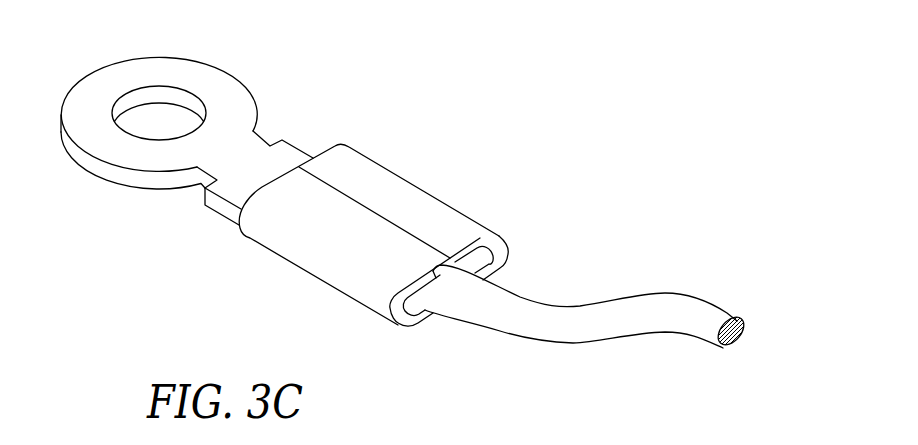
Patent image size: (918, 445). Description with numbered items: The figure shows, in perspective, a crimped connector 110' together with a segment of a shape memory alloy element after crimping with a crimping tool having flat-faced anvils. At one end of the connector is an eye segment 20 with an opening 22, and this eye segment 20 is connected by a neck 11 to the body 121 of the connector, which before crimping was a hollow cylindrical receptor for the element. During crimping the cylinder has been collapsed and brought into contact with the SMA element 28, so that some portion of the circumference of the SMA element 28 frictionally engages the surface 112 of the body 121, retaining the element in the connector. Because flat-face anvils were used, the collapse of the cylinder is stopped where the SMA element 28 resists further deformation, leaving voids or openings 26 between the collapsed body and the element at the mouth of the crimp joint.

The eye segment 20 is at (237, 73).
The opening 22 is at (157, 118).
The neck 11 is at (270, 138).
The crimped connector 110' is at (399, 228).
The body 121 is at (440, 194).
The surface 112 is at (505, 236).
The SMA element 28 is at (587, 317).
The voids or openings 26 is at (435, 297).